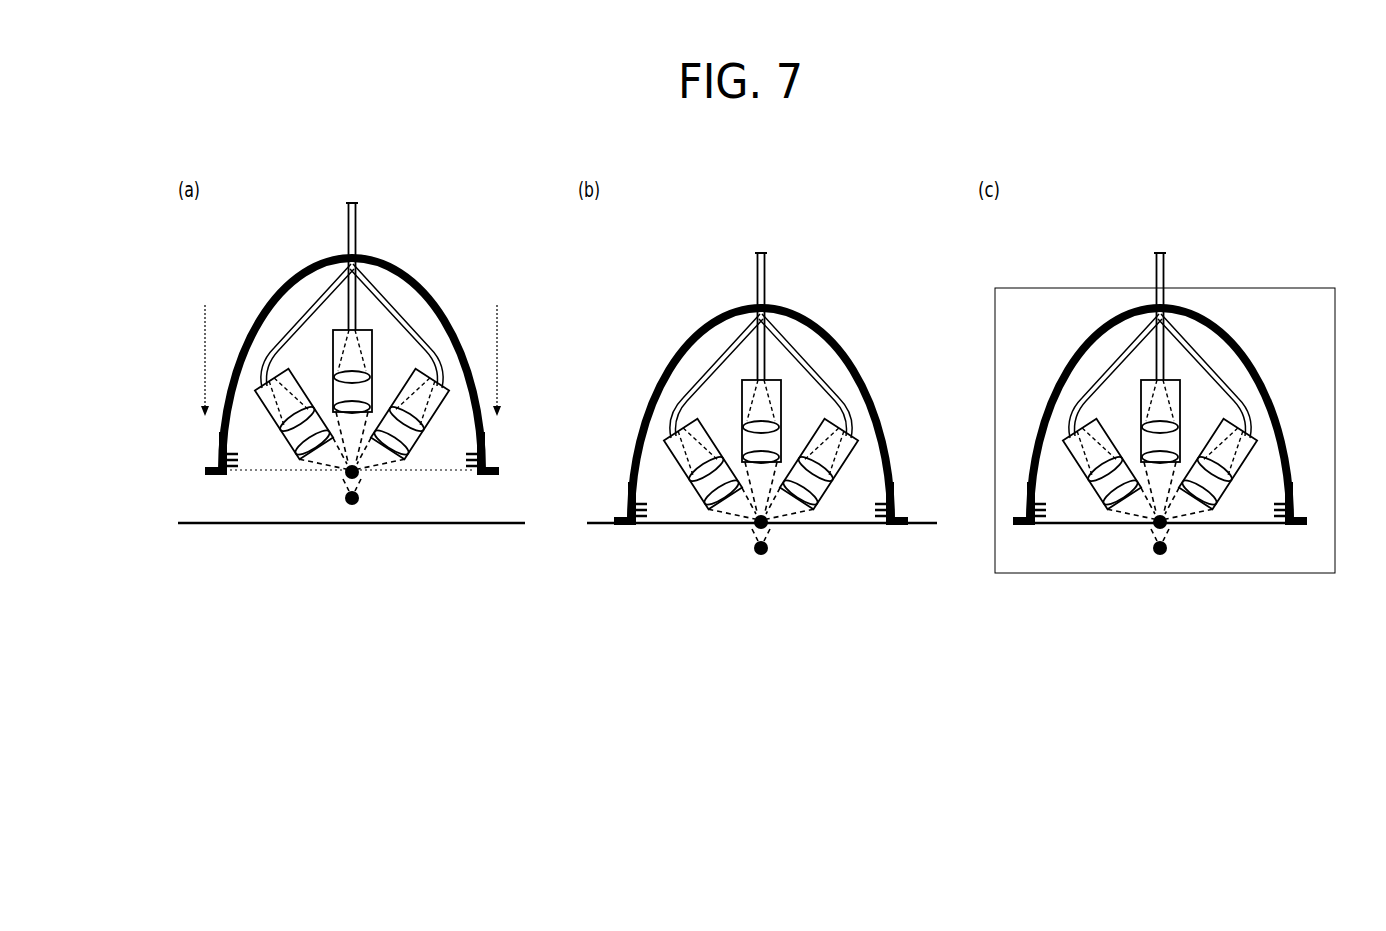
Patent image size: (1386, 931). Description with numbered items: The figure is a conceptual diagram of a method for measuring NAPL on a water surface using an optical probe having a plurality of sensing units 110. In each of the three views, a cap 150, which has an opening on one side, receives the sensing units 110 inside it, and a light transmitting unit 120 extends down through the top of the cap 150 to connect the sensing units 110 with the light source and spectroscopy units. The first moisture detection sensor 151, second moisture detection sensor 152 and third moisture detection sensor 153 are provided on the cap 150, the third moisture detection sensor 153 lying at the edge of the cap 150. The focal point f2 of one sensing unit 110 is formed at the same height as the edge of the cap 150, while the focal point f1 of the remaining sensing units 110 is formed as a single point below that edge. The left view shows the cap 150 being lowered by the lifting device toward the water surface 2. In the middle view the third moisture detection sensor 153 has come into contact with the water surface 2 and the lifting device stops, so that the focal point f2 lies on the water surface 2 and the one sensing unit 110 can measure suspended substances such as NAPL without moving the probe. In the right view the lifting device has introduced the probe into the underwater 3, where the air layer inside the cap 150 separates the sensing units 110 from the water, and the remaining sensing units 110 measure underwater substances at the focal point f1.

The sensing unit 110 is at (372, 394).
The light transmitting unit 120 is at (348, 224).
The cap 150 is at (272, 298).
The first moisture detection sensor 151 is at (228, 461).
The second moisture detection sensor 152 is at (216, 462).
The third moisture detection sensor 153 is at (208, 470).
The water surface 2 is at (193, 523).
The underwater 3 is at (1022, 560).
The focal point of the remaining sensing units f1 is at (358, 508).
The focal point of one sensing unit f2 is at (365, 472).